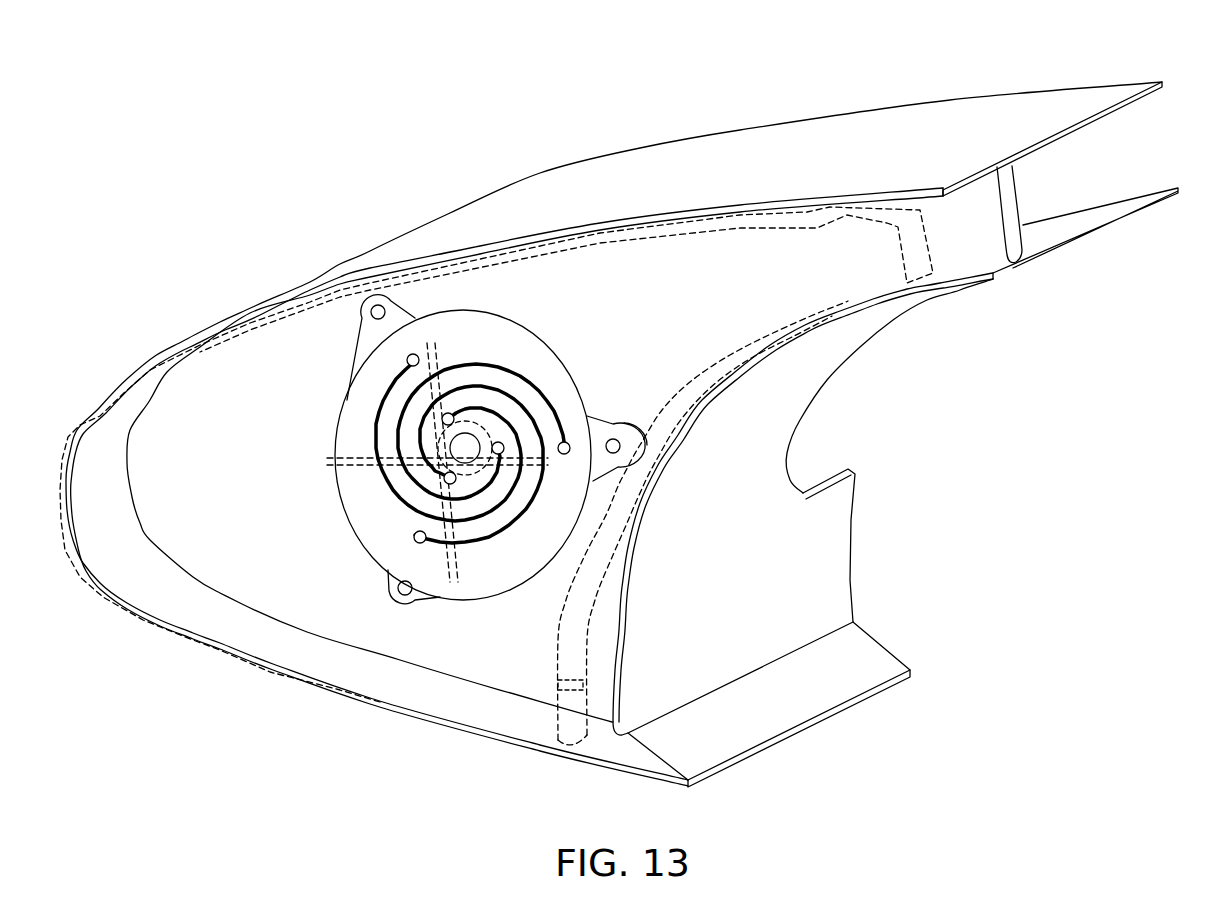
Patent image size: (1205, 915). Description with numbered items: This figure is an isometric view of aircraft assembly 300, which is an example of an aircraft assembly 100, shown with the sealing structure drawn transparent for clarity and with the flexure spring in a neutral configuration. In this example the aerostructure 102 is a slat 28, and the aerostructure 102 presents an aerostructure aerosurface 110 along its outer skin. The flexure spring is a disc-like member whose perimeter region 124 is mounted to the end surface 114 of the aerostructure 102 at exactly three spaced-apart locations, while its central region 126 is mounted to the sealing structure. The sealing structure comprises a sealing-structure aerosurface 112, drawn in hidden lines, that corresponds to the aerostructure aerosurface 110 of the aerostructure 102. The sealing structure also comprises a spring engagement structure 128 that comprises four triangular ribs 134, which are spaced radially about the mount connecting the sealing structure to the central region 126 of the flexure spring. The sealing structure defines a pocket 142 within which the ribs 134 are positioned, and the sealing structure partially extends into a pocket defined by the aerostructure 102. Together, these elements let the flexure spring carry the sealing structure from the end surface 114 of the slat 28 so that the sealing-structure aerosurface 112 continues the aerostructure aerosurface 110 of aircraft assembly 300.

The aircraft assembly 100 is at (430, 66).
The aircraft assembly 300 is at (512, 66).
The aerostructure 102 is at (812, 77).
The slat 28 is at (885, 100).
The aerostructure aerosurface 110 is at (846, 168).
The end surface 114 is at (983, 240).
The sealing-structure aerosurface 112 is at (762, 217).
The perimeter region 124 is at (440, 303).
The central region 126 is at (488, 427).
The spring engagement structure 128 is at (468, 515).
The triangular ribs 134 is at (420, 357).
The pocket 142 is at (583, 687).